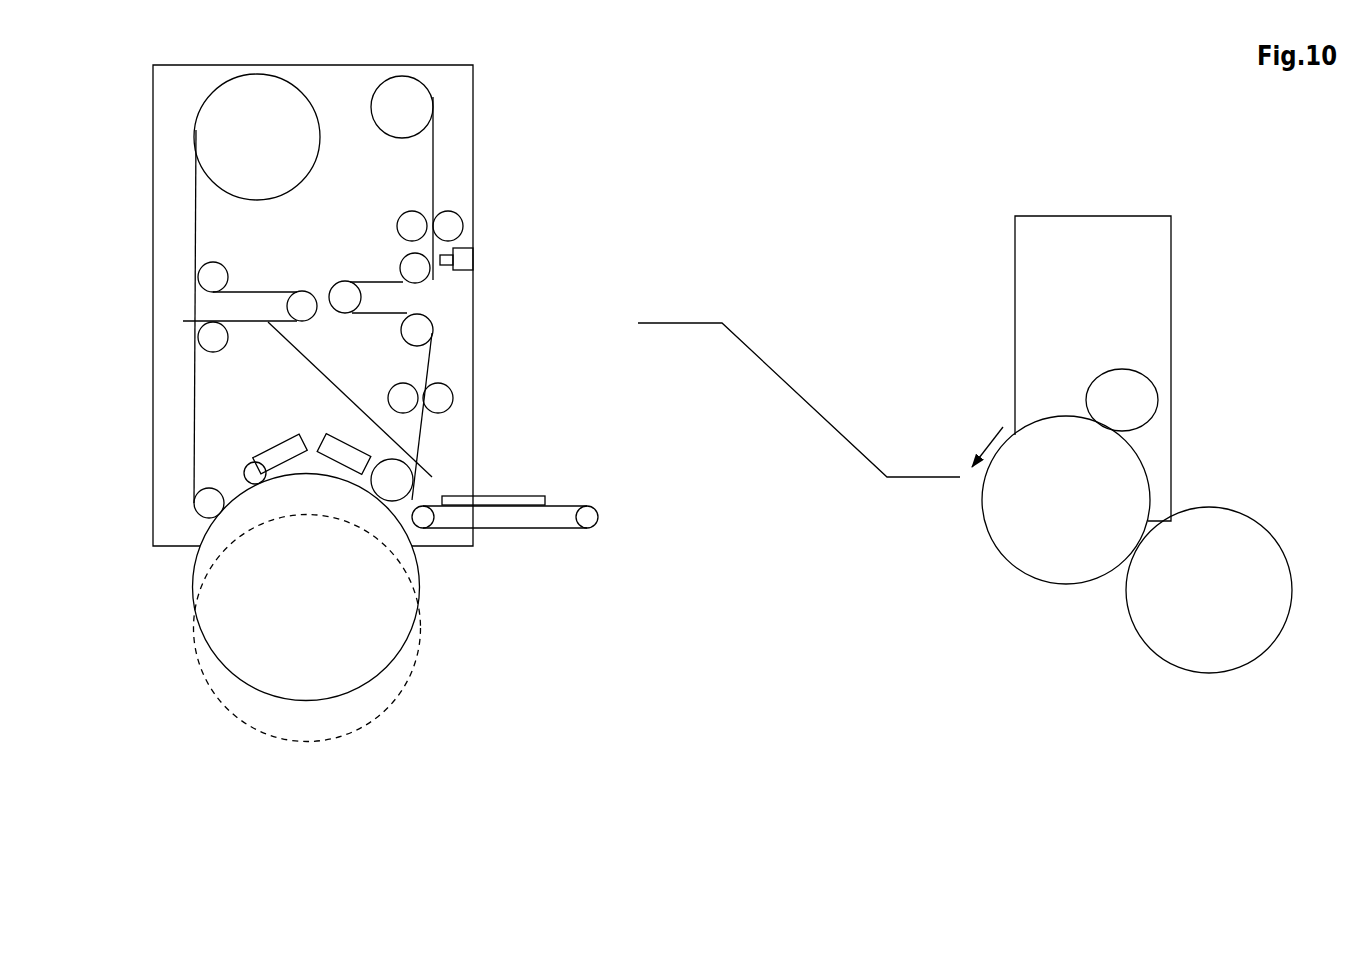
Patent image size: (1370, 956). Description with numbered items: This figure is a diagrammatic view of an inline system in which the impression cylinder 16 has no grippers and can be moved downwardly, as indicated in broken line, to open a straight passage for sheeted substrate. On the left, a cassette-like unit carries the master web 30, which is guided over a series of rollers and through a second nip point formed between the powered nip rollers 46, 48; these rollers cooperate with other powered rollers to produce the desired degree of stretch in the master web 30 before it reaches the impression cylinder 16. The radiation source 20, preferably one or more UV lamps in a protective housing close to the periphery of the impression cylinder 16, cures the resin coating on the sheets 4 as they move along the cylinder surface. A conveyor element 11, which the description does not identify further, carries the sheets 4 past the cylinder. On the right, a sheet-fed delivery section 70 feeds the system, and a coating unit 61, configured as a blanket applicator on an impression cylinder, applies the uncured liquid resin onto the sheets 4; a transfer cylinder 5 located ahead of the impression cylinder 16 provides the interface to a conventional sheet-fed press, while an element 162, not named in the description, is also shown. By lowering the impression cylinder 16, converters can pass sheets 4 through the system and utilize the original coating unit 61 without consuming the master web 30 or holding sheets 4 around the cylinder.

The master web 30 is at (500, 168).
The nip roller 46 is at (405, 383).
The nip roller 48 is at (456, 393).
The radiation source 20 is at (368, 456).
The sheets 4 is at (527, 486).
The conveyor belt 11 is at (581, 505).
The impression cylinder 16 is at (422, 567).
The sheet-fed delivery section 70 is at (766, 368).
The coating unit 61 is at (1117, 405).
The roller 162 is at (1032, 508).
The transfer cylinder 5 is at (1188, 552).